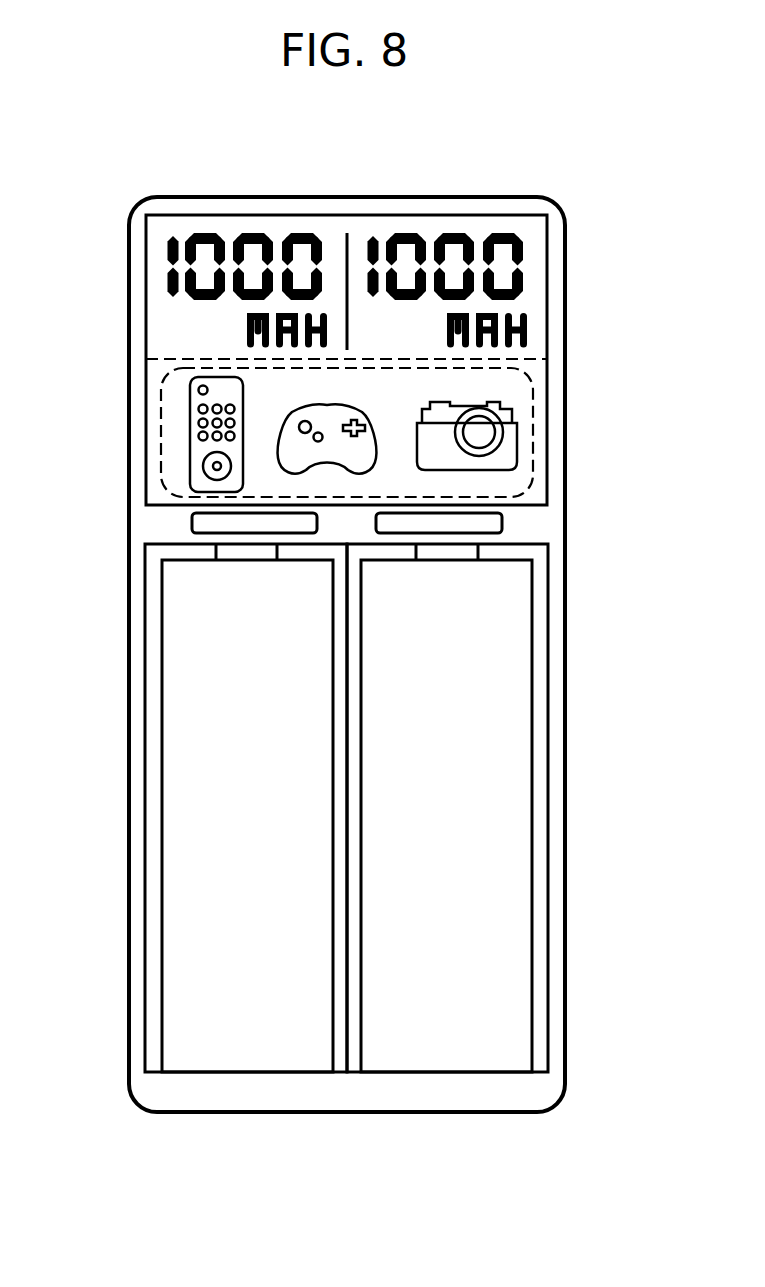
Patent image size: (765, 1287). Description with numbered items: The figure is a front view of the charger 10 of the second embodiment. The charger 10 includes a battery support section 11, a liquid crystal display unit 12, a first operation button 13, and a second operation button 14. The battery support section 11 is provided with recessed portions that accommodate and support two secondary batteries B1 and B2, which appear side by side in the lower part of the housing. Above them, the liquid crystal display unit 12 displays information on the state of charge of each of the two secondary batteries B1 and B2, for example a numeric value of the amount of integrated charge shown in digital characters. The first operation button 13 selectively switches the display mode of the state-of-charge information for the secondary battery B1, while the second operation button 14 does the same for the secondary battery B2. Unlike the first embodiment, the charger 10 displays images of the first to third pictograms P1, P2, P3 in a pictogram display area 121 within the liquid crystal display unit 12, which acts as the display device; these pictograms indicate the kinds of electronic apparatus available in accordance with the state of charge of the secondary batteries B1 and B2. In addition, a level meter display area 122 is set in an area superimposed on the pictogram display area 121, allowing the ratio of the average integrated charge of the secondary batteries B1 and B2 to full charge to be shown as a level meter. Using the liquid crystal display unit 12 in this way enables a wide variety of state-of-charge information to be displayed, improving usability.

The charger 10 is at (250, 181).
The battery support section 11 is at (548, 806).
The liquid crystal display unit 12 is at (538, 265).
The pictogram display area 121 is at (160, 458).
The level meter display area 122 is at (540, 357).
The first operation button 13 is at (195, 525).
The second operation button 14 is at (505, 525).
The first pictogram P1 is at (186, 413).
The second pictogram P2 is at (356, 405).
The third pictogram P3 is at (520, 442).
The secondary battery B1 is at (190, 732).
The secondary battery B2 is at (503, 732).